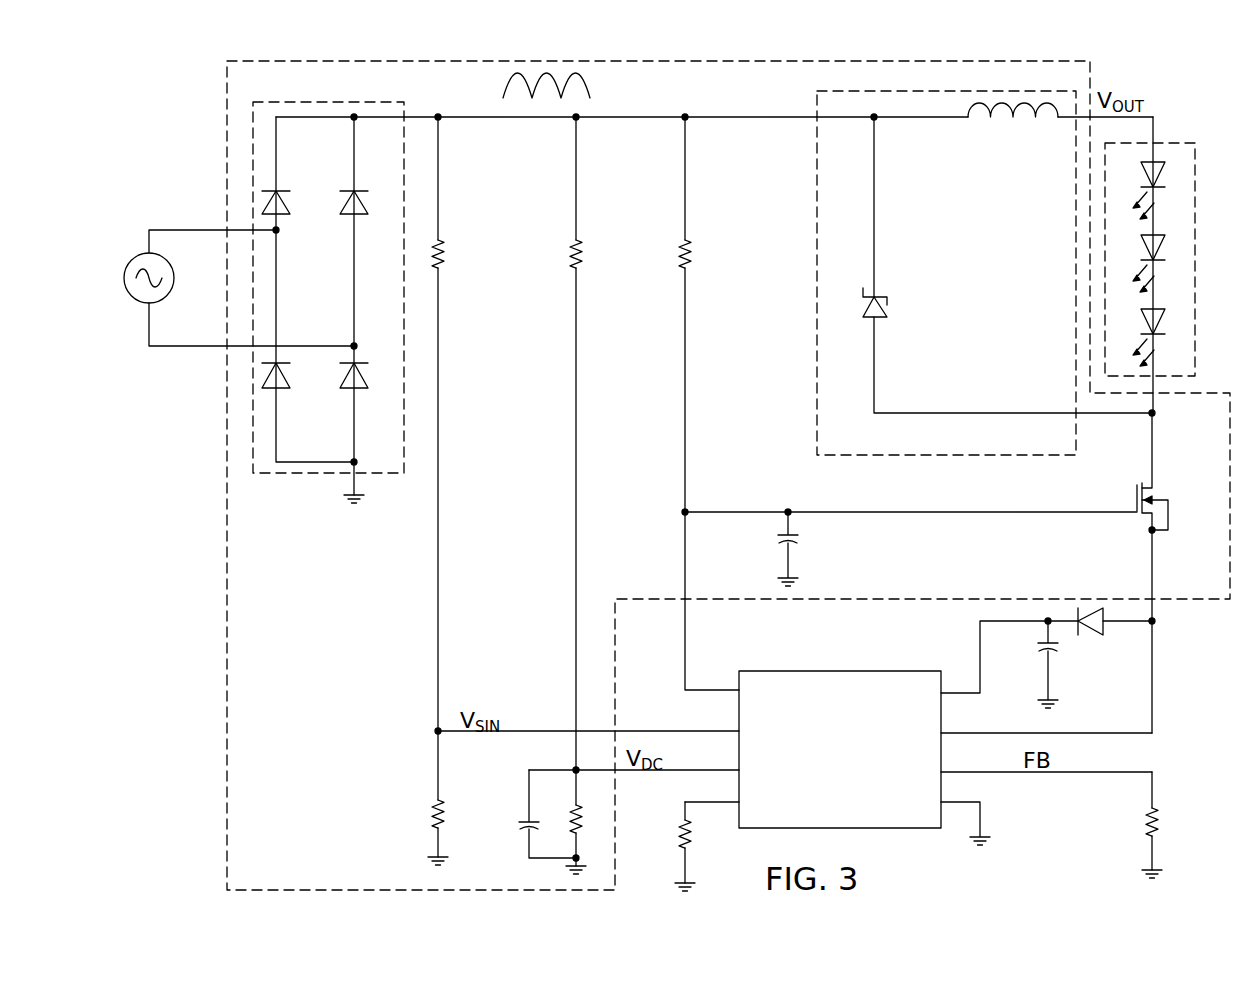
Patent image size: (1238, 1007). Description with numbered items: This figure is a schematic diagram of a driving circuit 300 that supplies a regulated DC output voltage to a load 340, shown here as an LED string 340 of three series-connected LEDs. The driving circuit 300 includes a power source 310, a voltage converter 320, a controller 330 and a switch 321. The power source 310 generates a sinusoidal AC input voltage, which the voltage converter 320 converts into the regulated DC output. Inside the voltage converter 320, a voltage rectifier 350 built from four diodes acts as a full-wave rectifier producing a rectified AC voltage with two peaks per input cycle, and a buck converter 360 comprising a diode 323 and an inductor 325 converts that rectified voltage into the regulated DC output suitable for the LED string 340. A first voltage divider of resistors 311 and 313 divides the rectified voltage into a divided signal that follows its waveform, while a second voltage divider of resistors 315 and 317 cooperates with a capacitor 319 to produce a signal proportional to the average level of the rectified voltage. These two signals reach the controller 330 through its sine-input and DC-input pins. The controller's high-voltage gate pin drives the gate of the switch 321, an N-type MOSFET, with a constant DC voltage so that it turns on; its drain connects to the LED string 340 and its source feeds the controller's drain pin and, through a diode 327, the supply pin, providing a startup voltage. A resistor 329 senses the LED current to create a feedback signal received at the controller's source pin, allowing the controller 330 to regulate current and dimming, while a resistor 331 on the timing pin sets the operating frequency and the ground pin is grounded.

The driving circuit 300 is at (178, 104).
The power source 310 is at (175, 286).
The resistor 311 is at (438, 240).
The resistor 313 is at (438, 800).
The resistor 315 is at (576, 240).
The resistor 317 is at (602, 790).
The capacitor 319 is at (520, 834).
The voltage converter 320 is at (545, 61).
The switch 321 is at (1137, 488).
The diode 323 is at (880, 297).
The inductor 325 is at (990, 118).
The diode 327 is at (1098, 636).
The resistor 329 is at (1152, 808).
The controller 330 is at (828, 671).
The resistor 331 is at (684, 848).
The LED string 340 is at (1172, 143).
The voltage rectifier 350 is at (404, 104).
The buck converter 360 is at (817, 180).